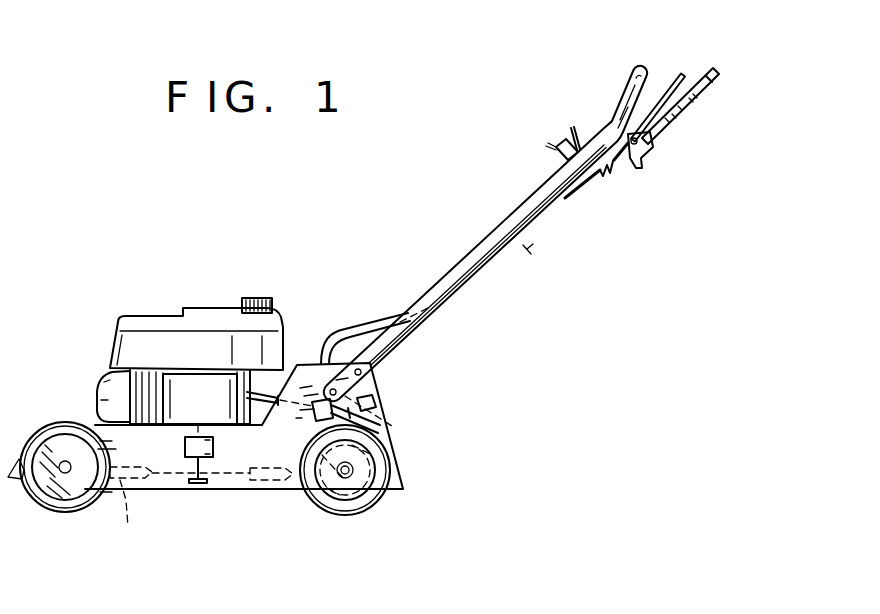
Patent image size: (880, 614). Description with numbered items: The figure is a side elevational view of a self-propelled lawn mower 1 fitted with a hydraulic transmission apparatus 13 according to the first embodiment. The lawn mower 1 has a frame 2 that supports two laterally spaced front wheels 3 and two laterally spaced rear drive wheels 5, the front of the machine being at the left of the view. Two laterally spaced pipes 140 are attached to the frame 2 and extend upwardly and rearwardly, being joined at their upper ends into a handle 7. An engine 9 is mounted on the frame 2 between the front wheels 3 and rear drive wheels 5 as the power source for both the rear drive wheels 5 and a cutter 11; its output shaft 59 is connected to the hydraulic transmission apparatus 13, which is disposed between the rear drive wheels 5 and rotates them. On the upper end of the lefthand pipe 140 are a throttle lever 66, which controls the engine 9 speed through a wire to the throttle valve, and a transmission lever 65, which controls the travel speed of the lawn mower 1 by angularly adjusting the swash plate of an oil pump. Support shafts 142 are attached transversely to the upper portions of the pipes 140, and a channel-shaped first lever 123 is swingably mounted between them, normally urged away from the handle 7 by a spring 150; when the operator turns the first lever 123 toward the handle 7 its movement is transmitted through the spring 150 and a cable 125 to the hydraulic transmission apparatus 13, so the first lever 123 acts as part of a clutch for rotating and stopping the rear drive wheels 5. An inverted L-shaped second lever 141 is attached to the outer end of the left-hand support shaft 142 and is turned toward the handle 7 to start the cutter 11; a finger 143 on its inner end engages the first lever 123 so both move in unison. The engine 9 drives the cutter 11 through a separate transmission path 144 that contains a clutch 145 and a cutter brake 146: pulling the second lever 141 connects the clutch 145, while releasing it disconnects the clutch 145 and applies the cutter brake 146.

The self-propelled lawn mower 1 is at (158, 257).
The frame 2 is at (410, 367).
The front wheels 3 is at (52, 424).
The rear drive wheels 5 is at (375, 505).
The handle 7 is at (640, 67).
The engine 9 is at (106, 382).
The cutter 11 is at (127, 516).
The hydraulic transmission apparatus 13 is at (395, 428).
The output shaft 59 is at (262, 425).
The transmission lever 65 is at (572, 126).
The throttle lever 66 is at (562, 147).
The first lever 123 is at (685, 73).
The cable 125 is at (547, 233).
The pipes 140 is at (505, 223).
The second lever 141 is at (717, 69).
The support shafts 142 is at (644, 154).
The finger 143 is at (697, 101).
The transmission path 144 is at (188, 432).
The clutch 145 is at (214, 443).
The cutter brake 146 is at (217, 452).
The spring 150 is at (610, 178).